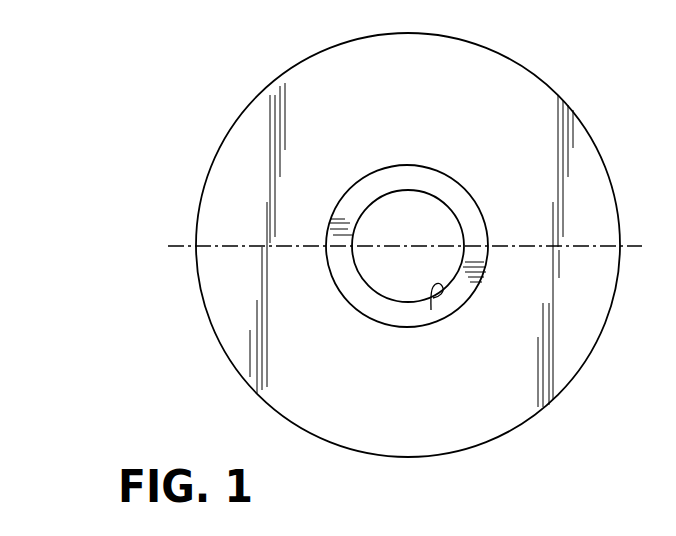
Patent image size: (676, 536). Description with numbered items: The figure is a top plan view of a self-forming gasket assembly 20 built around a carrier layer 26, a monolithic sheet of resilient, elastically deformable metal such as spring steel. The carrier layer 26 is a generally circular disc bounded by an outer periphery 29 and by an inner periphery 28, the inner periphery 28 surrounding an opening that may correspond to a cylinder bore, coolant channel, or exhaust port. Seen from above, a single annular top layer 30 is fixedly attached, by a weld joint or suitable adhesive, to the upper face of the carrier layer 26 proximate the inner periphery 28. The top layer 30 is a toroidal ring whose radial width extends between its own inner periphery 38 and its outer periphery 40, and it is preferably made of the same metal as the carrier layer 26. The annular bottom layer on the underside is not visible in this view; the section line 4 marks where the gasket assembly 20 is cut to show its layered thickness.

The gasket assembly 20 is at (155, 59).
The carrier layer 26 is at (484, 410).
The outer periphery 29 is at (545, 81).
The top layer 30 is at (425, 178).
The inner periphery 28 is at (350, 265).
The inner periphery of top layer 38 is at (431, 310).
The outer periphery of top layer 40 is at (461, 308).
The section line 4- 4 is at (169, 215).